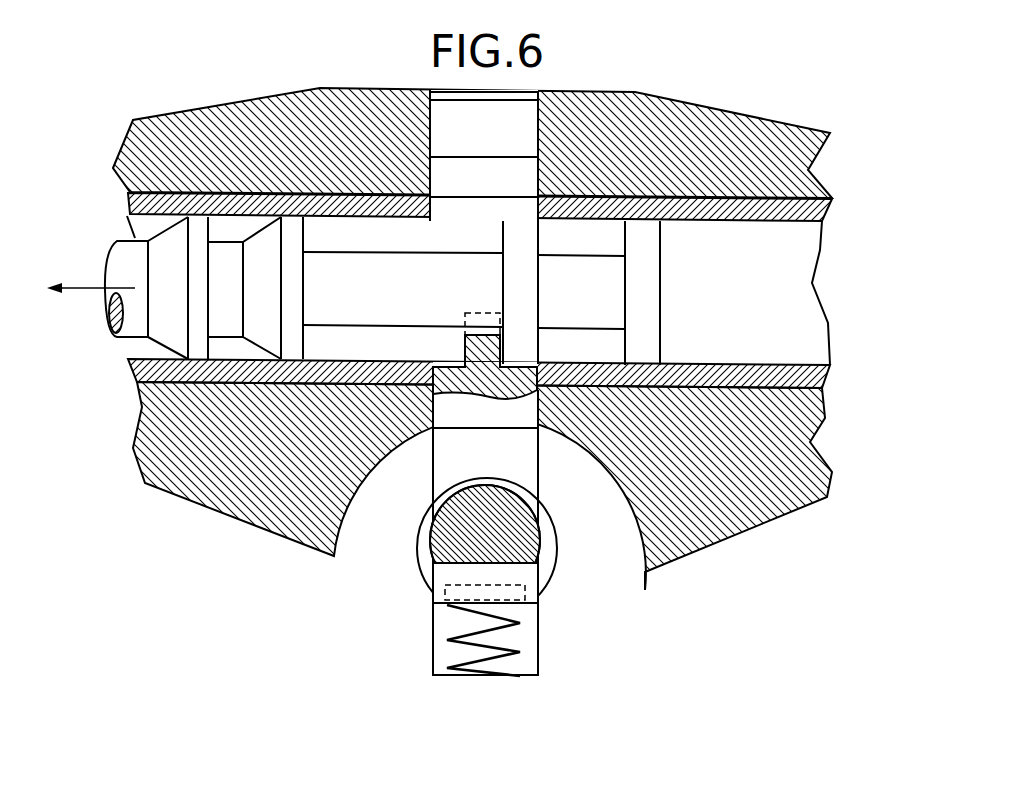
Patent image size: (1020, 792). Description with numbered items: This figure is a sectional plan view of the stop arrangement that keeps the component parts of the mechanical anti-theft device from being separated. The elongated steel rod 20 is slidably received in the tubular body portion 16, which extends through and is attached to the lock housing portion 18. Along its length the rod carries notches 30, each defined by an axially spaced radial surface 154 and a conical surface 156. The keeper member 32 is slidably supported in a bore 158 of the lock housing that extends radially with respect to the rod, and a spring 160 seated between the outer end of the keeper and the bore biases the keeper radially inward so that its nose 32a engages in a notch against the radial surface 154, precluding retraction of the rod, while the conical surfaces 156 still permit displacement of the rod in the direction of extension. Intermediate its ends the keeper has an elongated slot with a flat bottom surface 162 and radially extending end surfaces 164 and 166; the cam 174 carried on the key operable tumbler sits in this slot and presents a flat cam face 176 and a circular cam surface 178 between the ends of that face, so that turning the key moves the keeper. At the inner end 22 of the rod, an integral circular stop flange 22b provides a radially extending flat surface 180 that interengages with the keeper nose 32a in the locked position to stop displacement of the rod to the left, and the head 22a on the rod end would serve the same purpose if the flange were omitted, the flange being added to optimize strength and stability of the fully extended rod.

The elongated tubular body portion 16 is at (838, 199).
The lock housing portion 18 is at (809, 124).
The elongated steel rod 20 is at (99, 228).
The inner end 22 is at (605, 243).
The head 22a is at (640, 333).
The circular stop flange 22b is at (527, 240).
The annular groove 30 is at (242, 384).
The keeper member 32 is at (458, 412).
The nose 32a is at (460, 353).
The radial surface 154 is at (222, 243).
The conical surface 156 is at (270, 245).
The bore 158 is at (442, 652).
The spring 160 is at (523, 677).
The flat bottom surface 162 is at (445, 483).
The end surface 164 is at (450, 483).
The end surface 166 is at (535, 538).
The cam 174 is at (443, 542).
The flat cam face 176 is at (505, 592).
The circular cam surface 178 is at (540, 493).
The flat surface 180 is at (503, 241).